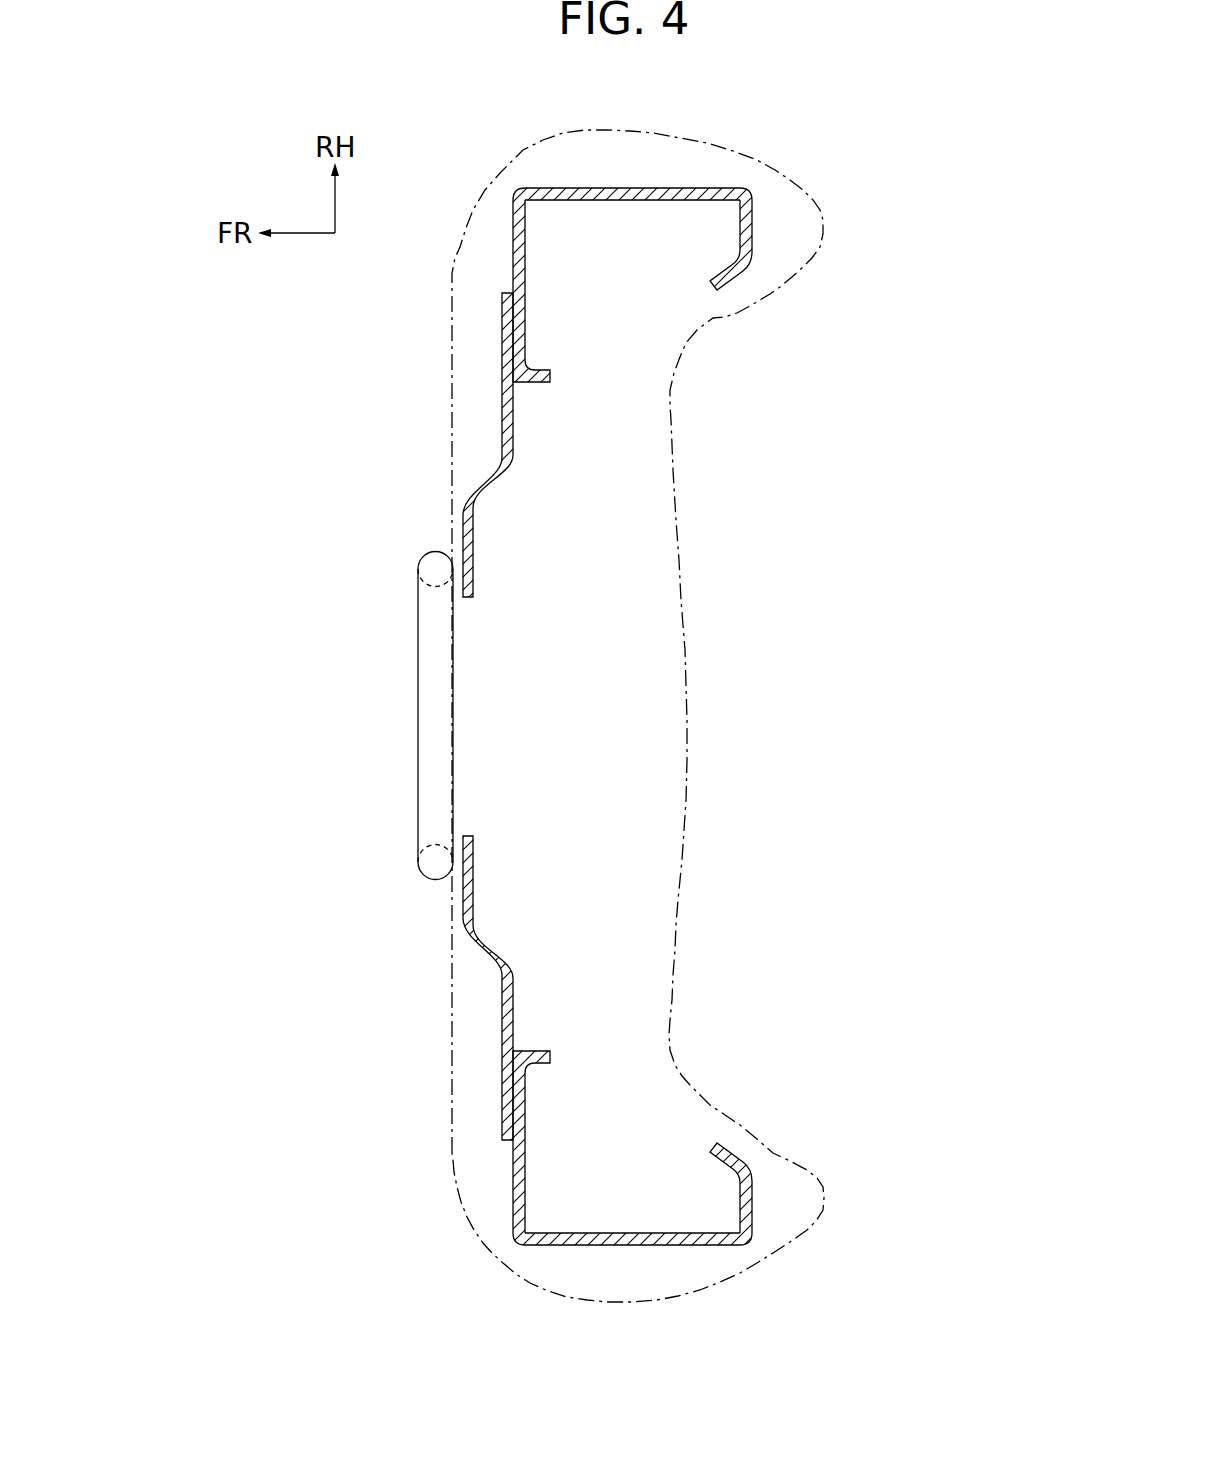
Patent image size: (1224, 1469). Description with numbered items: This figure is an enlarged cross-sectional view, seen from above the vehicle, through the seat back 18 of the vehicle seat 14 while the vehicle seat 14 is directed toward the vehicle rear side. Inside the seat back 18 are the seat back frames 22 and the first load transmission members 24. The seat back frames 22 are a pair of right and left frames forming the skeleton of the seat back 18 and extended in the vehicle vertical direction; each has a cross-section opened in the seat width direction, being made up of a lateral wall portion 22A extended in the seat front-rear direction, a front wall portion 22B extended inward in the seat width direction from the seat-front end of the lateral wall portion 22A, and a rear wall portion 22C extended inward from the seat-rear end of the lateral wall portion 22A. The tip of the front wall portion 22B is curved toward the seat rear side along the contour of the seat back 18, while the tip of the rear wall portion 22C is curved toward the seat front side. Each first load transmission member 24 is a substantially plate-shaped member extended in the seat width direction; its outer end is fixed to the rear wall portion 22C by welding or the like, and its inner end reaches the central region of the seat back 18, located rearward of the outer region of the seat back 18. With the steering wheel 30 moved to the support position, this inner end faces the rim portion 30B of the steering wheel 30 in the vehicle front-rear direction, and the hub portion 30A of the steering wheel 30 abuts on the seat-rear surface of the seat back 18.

The seat back 18 is at (667, 716).
The vehicle seat 14 is at (687, 650).
The seat back frame 22 is at (656, 717).
The lateral wall portion 22A is at (598, 187).
The front wall portion 22B is at (755, 230).
The rear wall portion 22C is at (512, 232).
The first load transmission member 24 is at (502, 366).
The steering wheel 30 is at (446, 754).
The hub portion 30A is at (454, 712).
The rim portion 30B is at (418, 562).